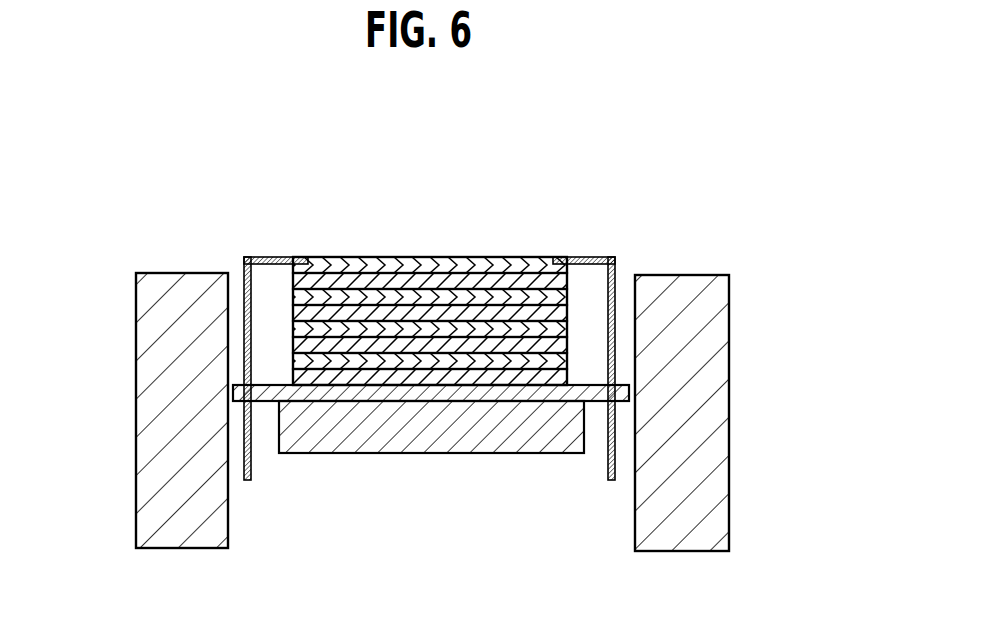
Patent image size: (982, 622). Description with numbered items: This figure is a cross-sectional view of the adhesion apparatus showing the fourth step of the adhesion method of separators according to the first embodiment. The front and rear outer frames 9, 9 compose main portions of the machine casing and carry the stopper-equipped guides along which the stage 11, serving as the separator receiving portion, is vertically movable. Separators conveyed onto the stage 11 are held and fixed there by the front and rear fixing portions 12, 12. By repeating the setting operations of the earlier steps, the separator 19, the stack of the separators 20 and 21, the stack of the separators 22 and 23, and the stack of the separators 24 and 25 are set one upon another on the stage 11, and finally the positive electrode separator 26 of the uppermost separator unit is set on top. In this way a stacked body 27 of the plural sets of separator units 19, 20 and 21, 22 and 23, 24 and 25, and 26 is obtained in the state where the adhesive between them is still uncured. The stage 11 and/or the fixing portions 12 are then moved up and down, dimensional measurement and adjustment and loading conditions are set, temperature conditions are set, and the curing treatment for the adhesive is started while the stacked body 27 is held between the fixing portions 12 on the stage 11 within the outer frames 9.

The outer frame 9 is at (718, 465).
The stage 11 is at (428, 446).
The fixing portion 12 is at (586, 258).
The separator 19 is at (560, 377).
The separator 20 is at (300, 364).
The separator 21 is at (560, 346).
The separator 22 is at (300, 331).
The separator 23 is at (560, 314).
The separator 24 is at (300, 298).
The separator 25 is at (560, 282).
The positive electrode separator 26 is at (515, 262).
The stacked body 27 is at (432, 245).